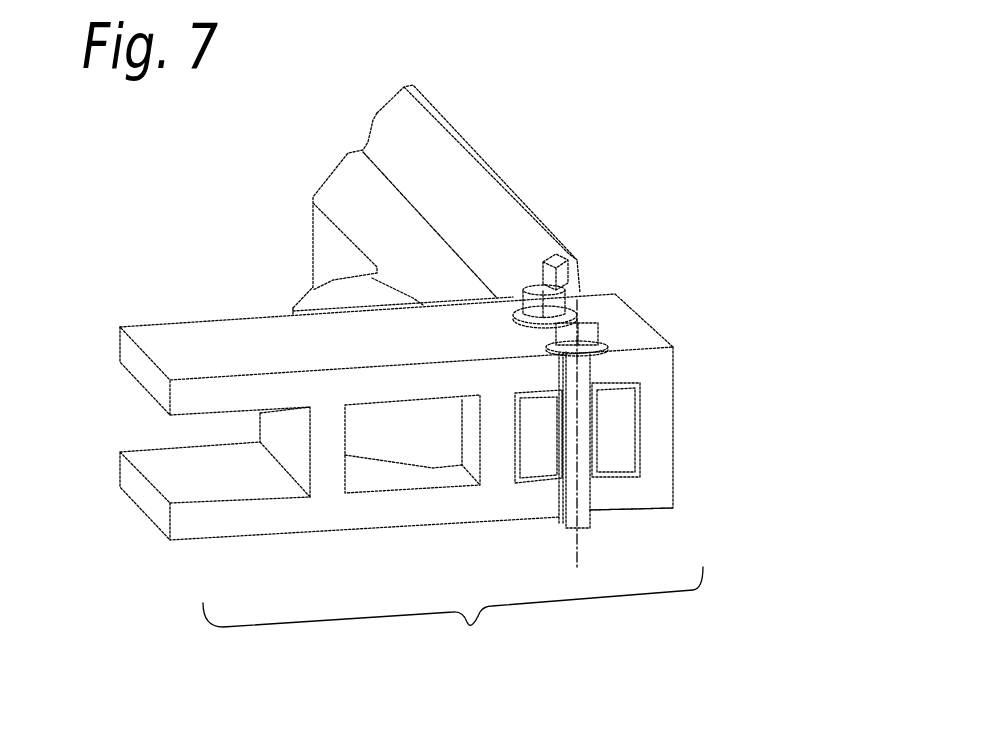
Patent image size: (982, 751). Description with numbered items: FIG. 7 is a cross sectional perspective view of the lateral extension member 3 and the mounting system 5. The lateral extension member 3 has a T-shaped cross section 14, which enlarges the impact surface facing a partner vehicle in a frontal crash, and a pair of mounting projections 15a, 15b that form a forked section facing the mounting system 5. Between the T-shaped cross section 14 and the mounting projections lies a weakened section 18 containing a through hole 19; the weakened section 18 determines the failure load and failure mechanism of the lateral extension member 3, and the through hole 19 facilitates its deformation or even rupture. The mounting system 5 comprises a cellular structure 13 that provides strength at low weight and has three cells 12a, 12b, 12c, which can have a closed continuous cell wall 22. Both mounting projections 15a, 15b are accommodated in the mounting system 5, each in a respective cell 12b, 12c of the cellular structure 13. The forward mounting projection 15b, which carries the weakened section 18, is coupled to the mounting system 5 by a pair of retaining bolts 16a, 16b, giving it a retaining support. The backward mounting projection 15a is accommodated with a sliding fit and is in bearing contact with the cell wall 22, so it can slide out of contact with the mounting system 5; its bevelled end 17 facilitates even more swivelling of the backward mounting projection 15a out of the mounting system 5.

The lateral extension member 3 is at (492, 134).
The mounting system 5 is at (612, 309).
The cell 12a is at (160, 472).
The cell 12b is at (388, 480).
The cell 12c is at (618, 388).
The cellular structure 13 is at (471, 630).
The T-shaped cross section 14 is at (352, 130).
The backward mounting projection 15a is at (283, 298).
The forward mounting projection 15b is at (613, 445).
The retaining bolt 16a is at (557, 290).
The retaining bolt 16b is at (598, 330).
The bevelled end 17 is at (358, 433).
The weakened section 18 is at (583, 254).
The through hole 19 is at (500, 290).
The cell wall 22 is at (417, 380).